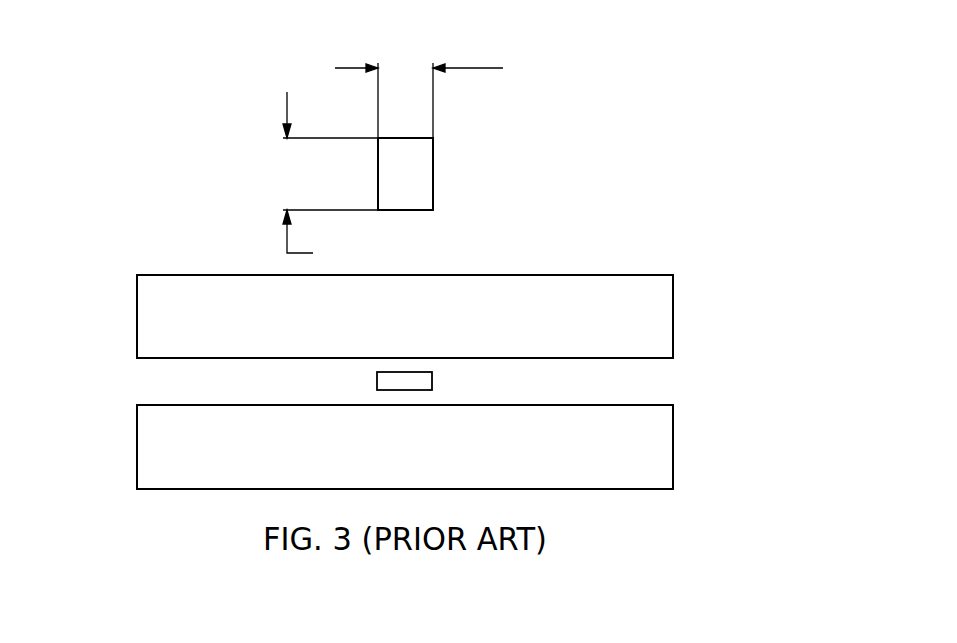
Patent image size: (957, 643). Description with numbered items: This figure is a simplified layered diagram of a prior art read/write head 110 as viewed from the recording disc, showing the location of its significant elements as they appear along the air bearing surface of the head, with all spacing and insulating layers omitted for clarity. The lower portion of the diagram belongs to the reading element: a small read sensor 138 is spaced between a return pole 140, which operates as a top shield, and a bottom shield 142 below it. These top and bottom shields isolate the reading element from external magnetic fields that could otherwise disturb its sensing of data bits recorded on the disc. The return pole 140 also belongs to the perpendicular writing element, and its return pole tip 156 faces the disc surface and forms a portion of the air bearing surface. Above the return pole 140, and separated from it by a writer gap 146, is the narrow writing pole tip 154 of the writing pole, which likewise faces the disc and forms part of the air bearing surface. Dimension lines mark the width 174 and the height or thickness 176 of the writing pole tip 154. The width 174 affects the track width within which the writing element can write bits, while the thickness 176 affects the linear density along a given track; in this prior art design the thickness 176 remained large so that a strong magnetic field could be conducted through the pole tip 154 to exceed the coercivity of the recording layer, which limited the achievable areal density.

The read/write head 110 is at (590, 124).
The read sensor 138 is at (432, 380).
The return pole 140 is at (655, 313).
The bottom shield 142 is at (660, 450).
The writer gap 146 is at (408, 247).
The writing pole tip 154 is at (425, 170).
The return pole tip 156 is at (172, 282).
The width 174 is at (451, 96).
The height or thickness 176 is at (330, 180).